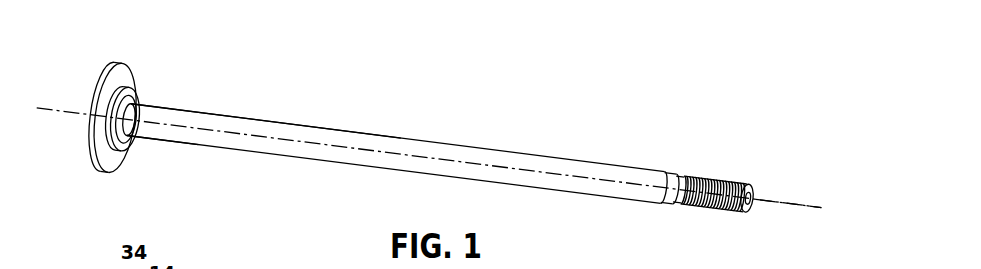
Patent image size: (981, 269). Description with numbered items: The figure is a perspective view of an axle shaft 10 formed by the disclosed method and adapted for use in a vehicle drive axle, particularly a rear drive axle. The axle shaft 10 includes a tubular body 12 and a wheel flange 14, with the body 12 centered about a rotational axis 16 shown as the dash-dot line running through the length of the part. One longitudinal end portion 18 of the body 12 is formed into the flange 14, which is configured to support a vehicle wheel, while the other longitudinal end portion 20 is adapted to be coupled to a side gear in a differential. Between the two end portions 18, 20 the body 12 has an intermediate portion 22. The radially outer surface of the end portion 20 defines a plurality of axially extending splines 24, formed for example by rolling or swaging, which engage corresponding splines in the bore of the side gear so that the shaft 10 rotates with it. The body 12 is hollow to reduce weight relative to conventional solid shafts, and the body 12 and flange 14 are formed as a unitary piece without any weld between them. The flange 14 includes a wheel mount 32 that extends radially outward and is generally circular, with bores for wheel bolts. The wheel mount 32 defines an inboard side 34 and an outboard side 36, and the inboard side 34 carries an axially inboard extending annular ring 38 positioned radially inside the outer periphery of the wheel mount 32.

The axle shaft 10 is at (421, 115).
The tubular body 12 is at (342, 140).
The wheel flange 14 is at (117, 115).
The rotational axis 16 is at (777, 198).
The longitudinal end portion 18 is at (165, 97).
The longitudinal end portion 20 is at (699, 154).
The intermediate portion 22 is at (283, 121).
The splines 24 is at (705, 180).
The wheel mount 32 is at (93, 128).
The inboard side 34 is at (114, 162).
The outboard side 36 is at (93, 150).
The annular ring 38 is at (133, 138).